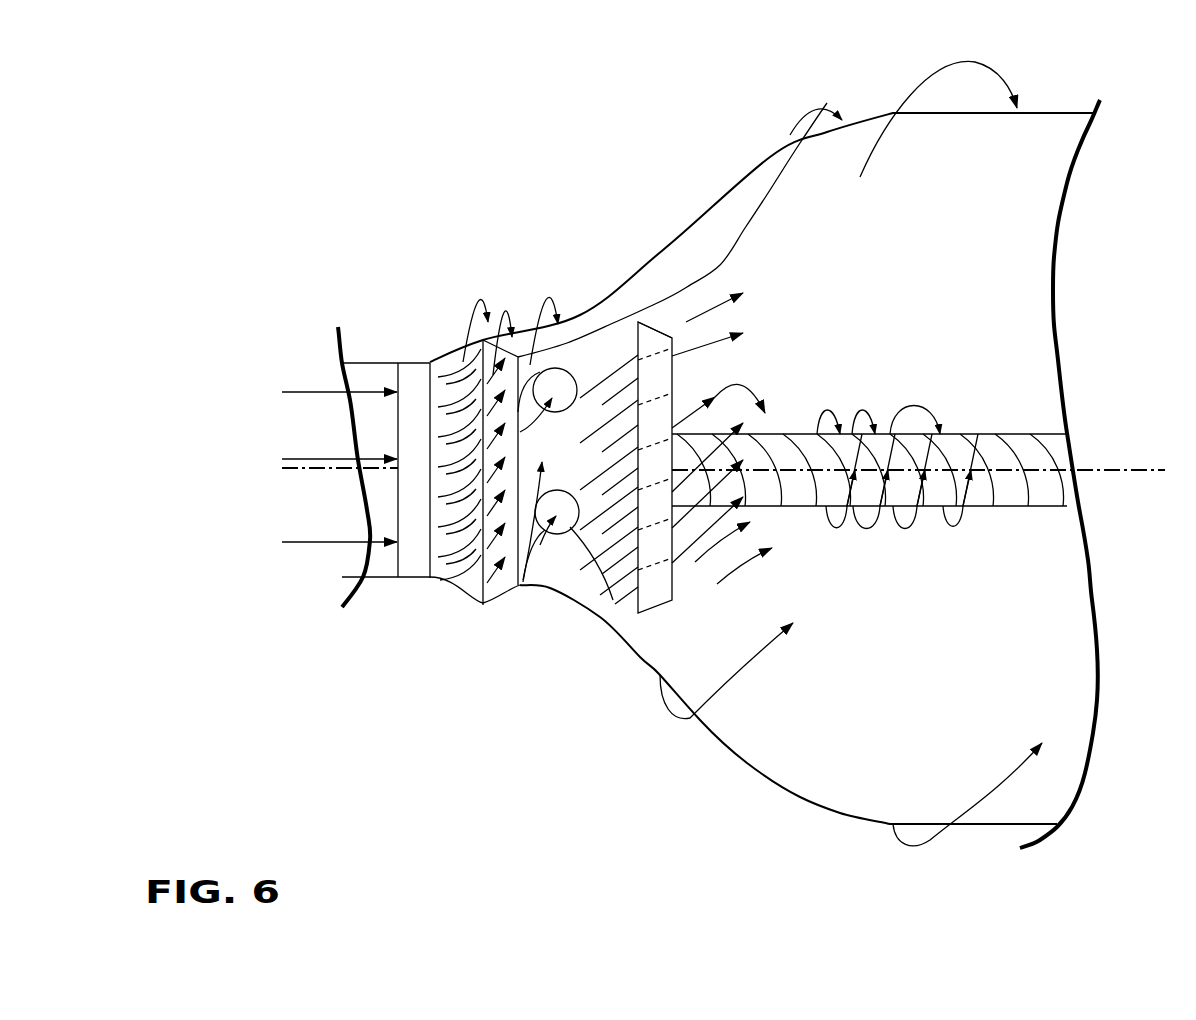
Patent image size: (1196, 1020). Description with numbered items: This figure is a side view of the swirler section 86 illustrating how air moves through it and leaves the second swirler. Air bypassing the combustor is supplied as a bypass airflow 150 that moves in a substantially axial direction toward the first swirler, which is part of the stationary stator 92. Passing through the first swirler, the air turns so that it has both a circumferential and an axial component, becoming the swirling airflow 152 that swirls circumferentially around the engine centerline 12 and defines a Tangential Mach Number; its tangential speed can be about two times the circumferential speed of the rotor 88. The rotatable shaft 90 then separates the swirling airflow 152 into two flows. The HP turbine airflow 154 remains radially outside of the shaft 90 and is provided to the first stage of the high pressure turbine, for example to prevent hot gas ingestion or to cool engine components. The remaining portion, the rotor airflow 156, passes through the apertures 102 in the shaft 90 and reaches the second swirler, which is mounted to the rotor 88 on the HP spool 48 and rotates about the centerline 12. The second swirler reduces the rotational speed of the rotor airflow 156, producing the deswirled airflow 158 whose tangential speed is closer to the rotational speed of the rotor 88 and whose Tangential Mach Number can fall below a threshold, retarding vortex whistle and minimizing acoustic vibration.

The centerline 12 is at (1133, 465).
The HP shaft or spool 48 is at (805, 452).
The swirler section 86 is at (398, 120).
The rotor 88 is at (1037, 415).
The shaft 90 is at (800, 797).
The stator 92 is at (364, 336).
The apertures 102 is at (600, 355).
The bypass airflow 150 is at (298, 382).
The swirling airflow 152 is at (483, 312).
The HP turbine airflow 154 is at (556, 316).
The rotor airflow 156 is at (558, 368).
The deswirled airflow 158 is at (688, 318).